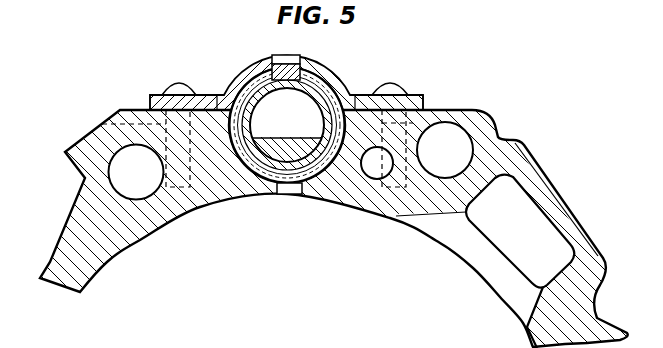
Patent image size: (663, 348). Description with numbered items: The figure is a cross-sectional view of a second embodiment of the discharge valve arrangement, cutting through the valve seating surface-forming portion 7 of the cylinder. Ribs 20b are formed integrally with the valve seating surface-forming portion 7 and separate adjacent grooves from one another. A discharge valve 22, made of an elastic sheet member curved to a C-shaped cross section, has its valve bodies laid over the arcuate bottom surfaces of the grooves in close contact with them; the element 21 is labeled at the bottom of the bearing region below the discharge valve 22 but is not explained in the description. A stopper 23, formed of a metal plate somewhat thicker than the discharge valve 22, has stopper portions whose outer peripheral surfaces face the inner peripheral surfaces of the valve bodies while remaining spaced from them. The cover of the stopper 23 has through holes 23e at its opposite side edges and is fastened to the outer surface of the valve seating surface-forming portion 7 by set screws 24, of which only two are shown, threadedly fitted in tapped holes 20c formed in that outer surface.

The valve seating surface-forming portion 7 is at (228, 195).
The rib 20b is at (208, 137).
The tapped hole 20c is at (102, 124).
The shaft 21 is at (300, 194).
The discharge valve 22 is at (336, 166).
The stopper 23 is at (357, 66).
The through hole 23e is at (148, 108).
The set screw 24 is at (180, 83).